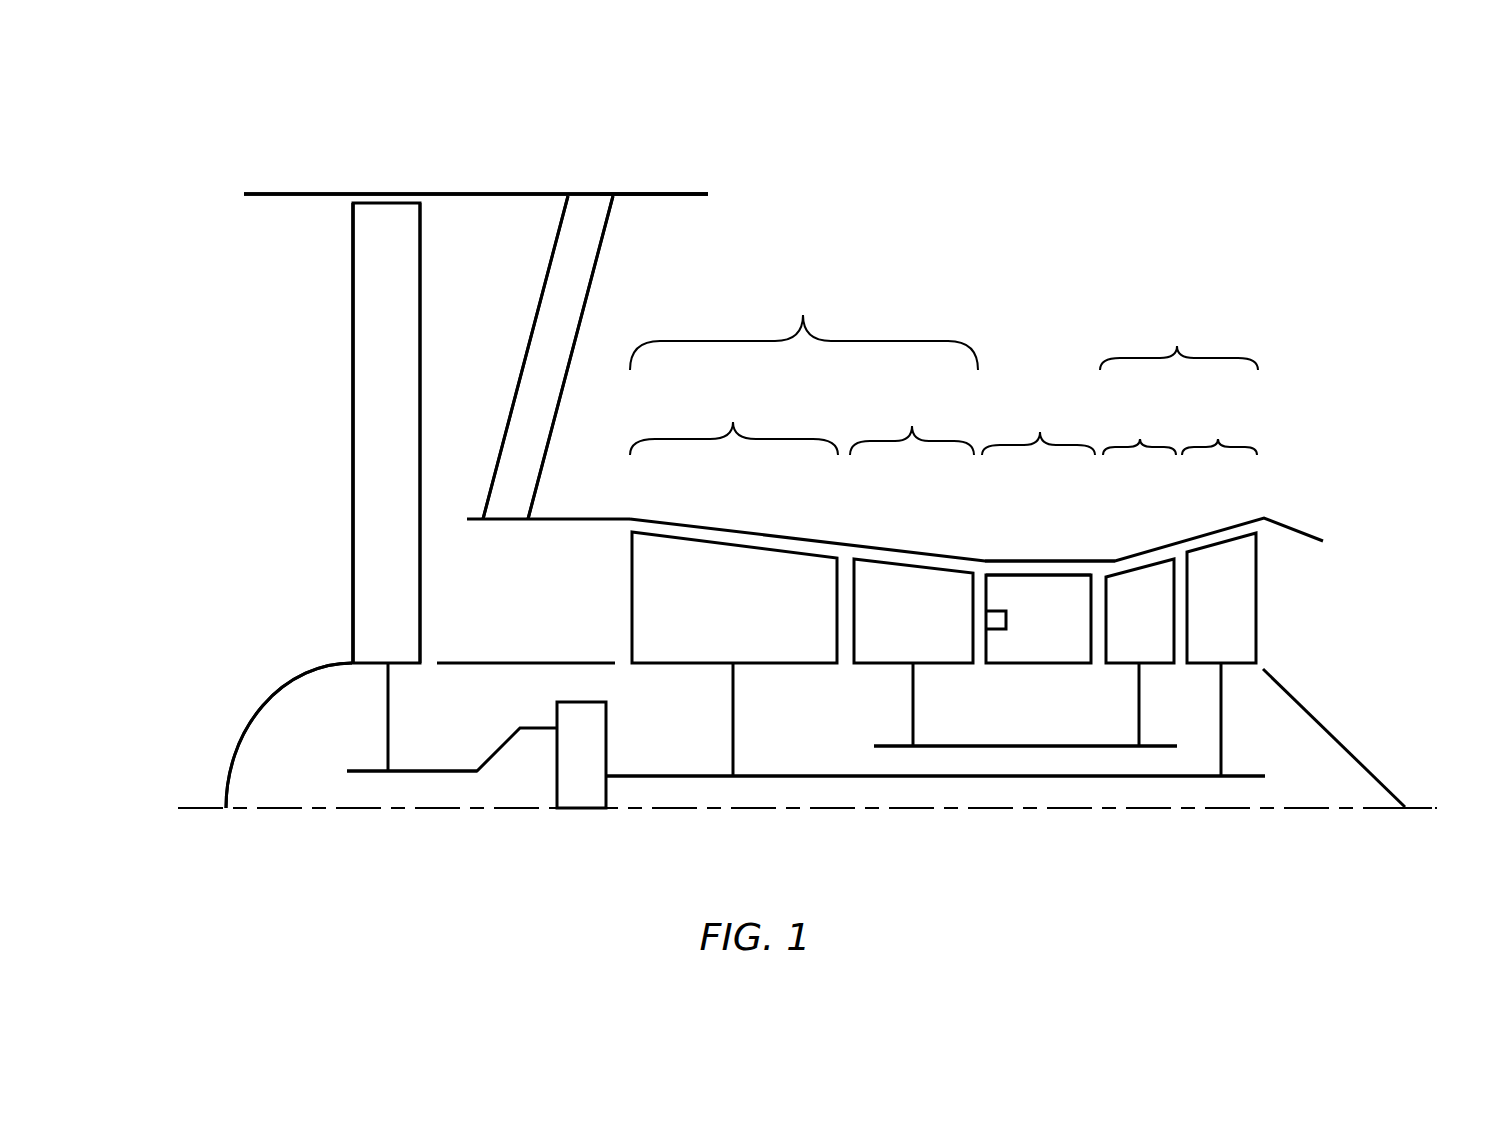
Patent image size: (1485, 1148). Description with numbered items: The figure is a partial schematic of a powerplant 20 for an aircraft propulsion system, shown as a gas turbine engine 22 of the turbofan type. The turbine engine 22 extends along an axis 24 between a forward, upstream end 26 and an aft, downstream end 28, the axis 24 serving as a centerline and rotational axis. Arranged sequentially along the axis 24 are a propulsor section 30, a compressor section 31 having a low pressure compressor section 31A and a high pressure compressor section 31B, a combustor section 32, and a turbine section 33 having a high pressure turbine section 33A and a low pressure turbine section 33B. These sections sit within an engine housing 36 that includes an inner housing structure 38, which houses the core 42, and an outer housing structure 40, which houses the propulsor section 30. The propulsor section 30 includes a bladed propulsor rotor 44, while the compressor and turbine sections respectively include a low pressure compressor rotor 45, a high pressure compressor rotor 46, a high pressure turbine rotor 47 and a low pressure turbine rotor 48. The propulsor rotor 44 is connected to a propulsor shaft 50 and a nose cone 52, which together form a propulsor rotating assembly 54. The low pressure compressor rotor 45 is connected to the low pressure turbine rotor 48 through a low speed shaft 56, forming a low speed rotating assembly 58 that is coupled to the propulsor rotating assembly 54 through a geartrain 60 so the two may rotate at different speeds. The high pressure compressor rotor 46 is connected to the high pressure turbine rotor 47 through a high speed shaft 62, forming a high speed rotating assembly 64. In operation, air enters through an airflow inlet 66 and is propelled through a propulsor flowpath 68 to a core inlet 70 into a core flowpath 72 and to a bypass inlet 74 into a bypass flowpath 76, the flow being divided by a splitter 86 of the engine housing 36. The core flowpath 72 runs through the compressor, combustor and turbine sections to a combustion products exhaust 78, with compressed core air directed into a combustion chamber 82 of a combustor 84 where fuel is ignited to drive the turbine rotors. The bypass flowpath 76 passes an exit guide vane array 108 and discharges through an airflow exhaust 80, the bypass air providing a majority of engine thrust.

The powerplant 20 is at (402, 124).
The gas turbine engine 22 is at (218, 105).
The axis 24 is at (198, 811).
The forward upstream end 26 is at (226, 806).
The aft downstream end 28 is at (1404, 806).
The propulsor section 30 is at (388, 182).
The compressor section 31 is at (804, 328).
The low pressure compressor section 31A is at (734, 426).
The high pressure compressor section 31B is at (912, 431).
The combustor section 32 is at (1038, 433).
The turbine section 33 is at (1179, 343).
The high pressure turbine section 33A is at (1139, 436).
The low pressure turbine section 33B is at (1219, 434).
The engine housing 36 is at (742, 183).
The inner housing structure 38 is at (758, 523).
The outer housing structure 40 is at (628, 187).
The core 42 is at (1045, 332).
The propulsor rotor 44 is at (376, 704).
The low pressure compressor rotor 45 is at (715, 621).
The high pressure compressor rotor 46 is at (897, 621).
The high pressure turbine rotor 47 is at (1122, 621).
The low pressure turbine rotor 48 is at (1204, 621).
The propulsor shaft 50 is at (413, 777).
The nose cone 52 is at (266, 712).
The propulsor rotating assembly 54 is at (326, 764).
The low speed shaft 56 is at (782, 778).
The low speed rotating assembly 58 is at (1268, 772).
The geartrain 60 is at (567, 769).
The high speed shaft 62 is at (1032, 748).
The high speed rotating assembly 64 is at (856, 731).
The airflow inlet 66 is at (206, 465).
The propulsor flowpath 68 is at (290, 461).
The core inlet 70 is at (448, 620).
The core flowpath 72 is at (530, 609).
The bypass inlet 74 is at (448, 333).
The bypass flowpath 76 is at (625, 313).
The combustion products exhaust 78 is at (1320, 643).
The airflow exhaust 80 is at (705, 262).
The combustion chamber 82 is at (1025, 621).
The combustor 84 is at (1040, 573).
The splitter 86 is at (468, 517).
The exit guide vane array 108 is at (597, 262).